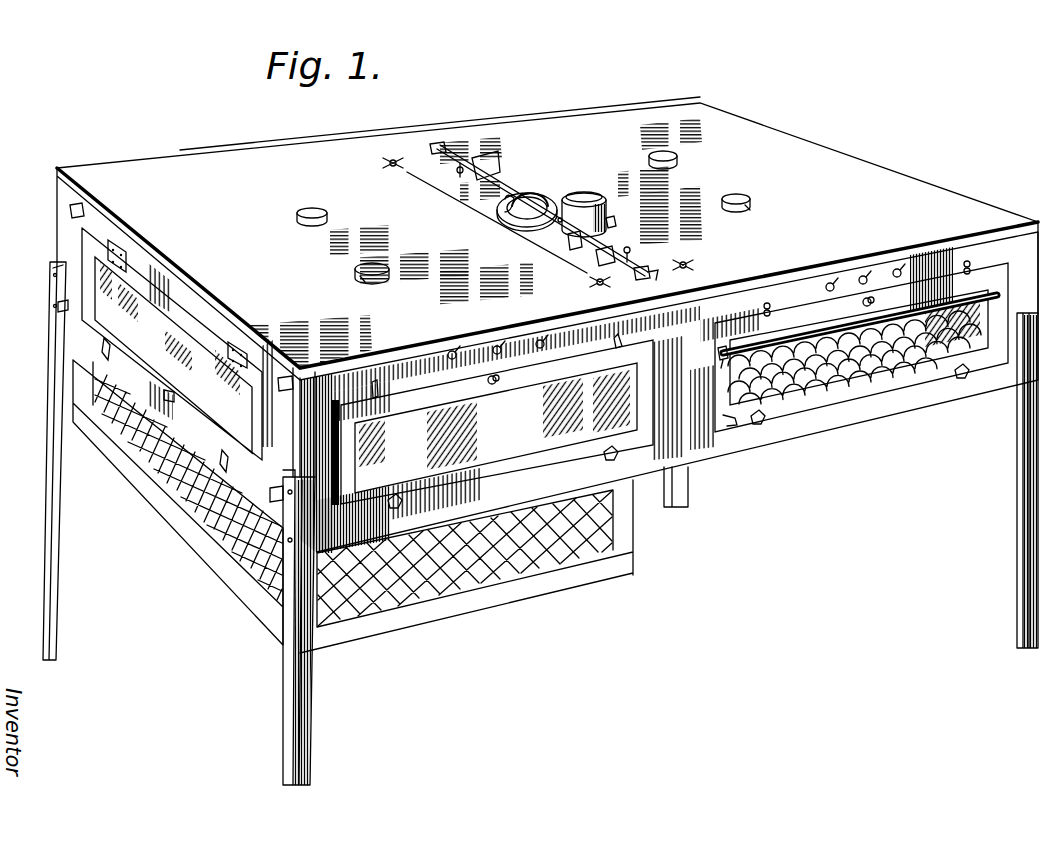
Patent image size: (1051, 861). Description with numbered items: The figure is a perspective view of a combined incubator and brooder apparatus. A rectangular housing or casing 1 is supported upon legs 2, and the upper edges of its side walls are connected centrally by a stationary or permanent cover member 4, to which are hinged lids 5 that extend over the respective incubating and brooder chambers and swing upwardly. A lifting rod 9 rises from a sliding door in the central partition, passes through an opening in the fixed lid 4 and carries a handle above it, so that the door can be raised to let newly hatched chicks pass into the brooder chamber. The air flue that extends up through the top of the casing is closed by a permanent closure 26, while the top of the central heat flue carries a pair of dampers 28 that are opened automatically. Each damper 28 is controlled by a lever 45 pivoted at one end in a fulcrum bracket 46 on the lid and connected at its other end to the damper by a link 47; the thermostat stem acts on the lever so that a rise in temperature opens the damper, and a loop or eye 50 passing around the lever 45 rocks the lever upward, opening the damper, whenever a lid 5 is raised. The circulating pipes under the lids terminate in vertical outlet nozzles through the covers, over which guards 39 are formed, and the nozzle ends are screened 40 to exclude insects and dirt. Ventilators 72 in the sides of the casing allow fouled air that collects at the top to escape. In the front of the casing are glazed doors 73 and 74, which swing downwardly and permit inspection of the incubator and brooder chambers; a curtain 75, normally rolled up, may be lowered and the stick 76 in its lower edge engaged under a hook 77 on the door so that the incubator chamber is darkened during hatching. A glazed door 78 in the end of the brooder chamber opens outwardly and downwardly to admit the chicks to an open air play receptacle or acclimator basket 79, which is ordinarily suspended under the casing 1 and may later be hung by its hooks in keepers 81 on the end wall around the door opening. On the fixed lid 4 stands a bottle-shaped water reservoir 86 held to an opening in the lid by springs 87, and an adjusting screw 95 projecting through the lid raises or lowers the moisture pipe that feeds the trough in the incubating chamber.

The housing or case 1 is at (712, 452).
The legs 2 is at (60, 566).
The stationary cover member 4 is at (393, 143).
The hinged lids 5 is at (192, 165).
The lifting rod 9 is at (460, 168).
The permanent closure 26 is at (546, 230).
The dampers 28 is at (543, 200).
The guards 39 is at (322, 198).
The screened ends 40 is at (360, 283).
The lever 45 is at (500, 178).
The fulcrum bracket 46 is at (440, 147).
The link 47 is at (503, 221).
The loop or eye 50 is at (500, 172).
The ventilators 72 is at (538, 342).
The glazed door 73 is at (852, 392).
The glazed door 74 is at (462, 473).
The curtain 75 is at (958, 298).
The stick 76 is at (720, 355).
The hook 77 is at (735, 425).
The glazed door 78 is at (145, 290).
The open air play receptacle 79 is at (472, 598).
The keepers 81 is at (78, 207).
The reservoir 86 is at (596, 203).
The springs 87 is at (616, 220).
The adjusting screw 95 is at (575, 205).